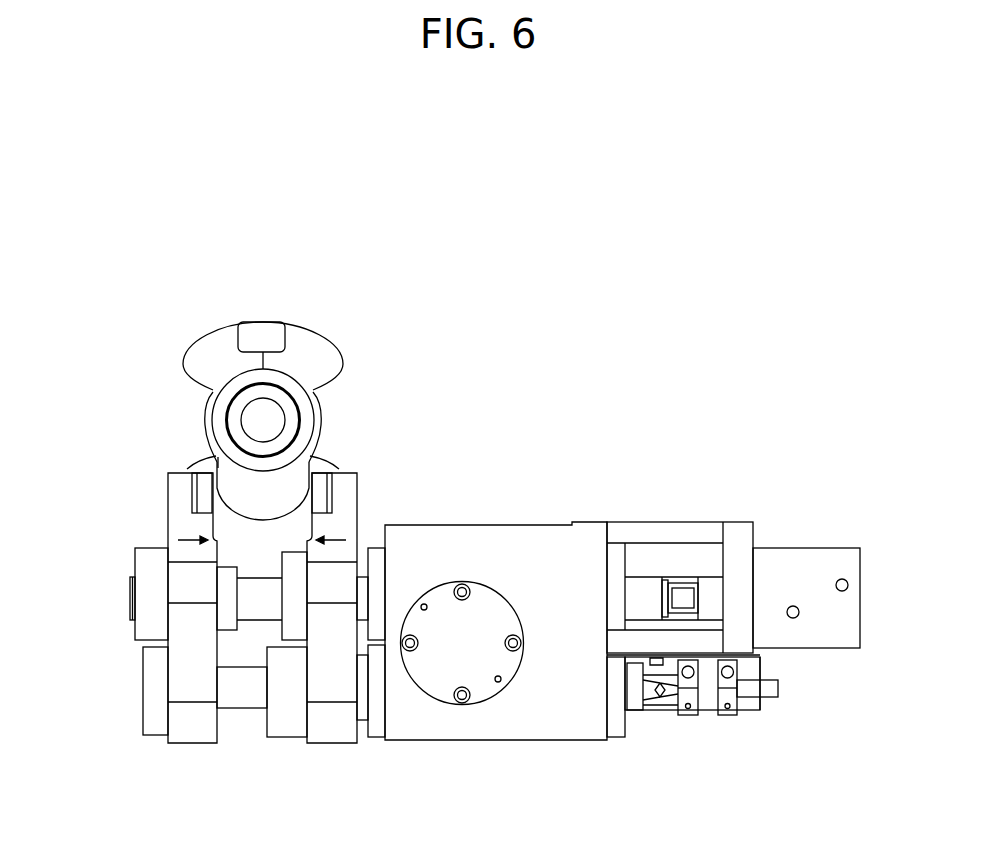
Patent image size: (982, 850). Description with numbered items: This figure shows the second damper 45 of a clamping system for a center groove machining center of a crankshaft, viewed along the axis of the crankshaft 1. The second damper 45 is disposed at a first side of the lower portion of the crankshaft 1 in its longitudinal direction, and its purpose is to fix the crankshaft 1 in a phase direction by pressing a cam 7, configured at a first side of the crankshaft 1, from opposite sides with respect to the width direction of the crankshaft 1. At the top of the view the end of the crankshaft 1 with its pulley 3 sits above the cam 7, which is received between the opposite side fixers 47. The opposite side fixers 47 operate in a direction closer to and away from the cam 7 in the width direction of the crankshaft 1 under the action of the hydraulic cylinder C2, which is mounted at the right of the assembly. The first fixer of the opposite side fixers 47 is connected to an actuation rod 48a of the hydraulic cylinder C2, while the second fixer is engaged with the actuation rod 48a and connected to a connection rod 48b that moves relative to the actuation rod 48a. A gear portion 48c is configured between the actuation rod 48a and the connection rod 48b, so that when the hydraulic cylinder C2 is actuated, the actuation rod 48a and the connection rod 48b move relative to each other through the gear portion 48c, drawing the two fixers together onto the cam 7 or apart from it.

The second damper 45 is at (491, 310).
The crankshaft 1 is at (218, 417).
The pulley 3 is at (265, 418).
The cam 7 is at (275, 490).
The opposite side fixers 47 is at (190, 525).
The actuation rod 48a is at (250, 596).
The connection rod 48b is at (242, 690).
The gear portion 48c is at (462, 612).
The hydraulic cylinder C2 is at (807, 570).